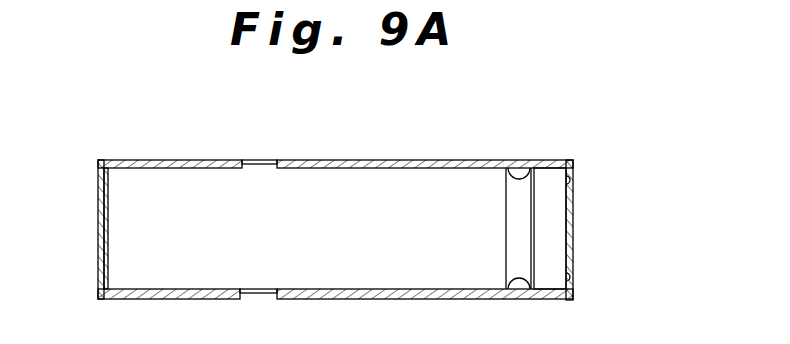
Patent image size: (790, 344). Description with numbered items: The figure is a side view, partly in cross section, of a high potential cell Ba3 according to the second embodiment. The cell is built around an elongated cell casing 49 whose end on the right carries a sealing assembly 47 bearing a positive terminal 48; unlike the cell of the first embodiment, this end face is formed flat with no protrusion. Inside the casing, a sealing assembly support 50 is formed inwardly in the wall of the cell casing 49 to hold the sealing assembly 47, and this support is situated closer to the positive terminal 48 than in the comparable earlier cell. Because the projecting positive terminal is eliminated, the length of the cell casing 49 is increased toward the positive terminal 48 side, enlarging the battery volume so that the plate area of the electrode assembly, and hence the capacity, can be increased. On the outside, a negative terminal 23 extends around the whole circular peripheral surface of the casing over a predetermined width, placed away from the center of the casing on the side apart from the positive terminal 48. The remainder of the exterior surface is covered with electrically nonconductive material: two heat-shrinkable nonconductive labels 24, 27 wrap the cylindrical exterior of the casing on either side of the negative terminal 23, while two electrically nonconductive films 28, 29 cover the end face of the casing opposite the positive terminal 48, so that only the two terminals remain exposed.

The high potential cell Ba3 is at (336, 184).
The negative terminal 23 is at (258, 161).
The heat-shrinkable nonconductive label 24 is at (387, 160).
The heat-shrinkable nonconductive label 27 is at (172, 160).
The electrically nonconductive film 28 is at (108, 236).
The electrically nonconductive film 29 is at (98, 215).
The sealing assembly 47 is at (547, 220).
The positive terminal 48 is at (568, 240).
The cell casing 49 is at (470, 192).
The sealing assembly support 50 is at (517, 236).